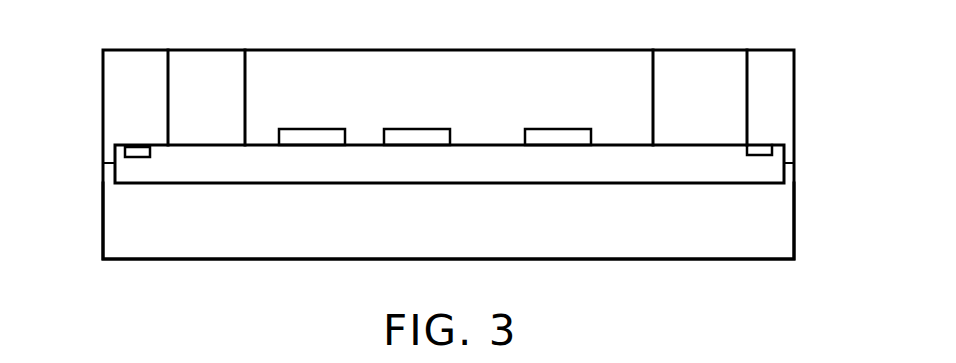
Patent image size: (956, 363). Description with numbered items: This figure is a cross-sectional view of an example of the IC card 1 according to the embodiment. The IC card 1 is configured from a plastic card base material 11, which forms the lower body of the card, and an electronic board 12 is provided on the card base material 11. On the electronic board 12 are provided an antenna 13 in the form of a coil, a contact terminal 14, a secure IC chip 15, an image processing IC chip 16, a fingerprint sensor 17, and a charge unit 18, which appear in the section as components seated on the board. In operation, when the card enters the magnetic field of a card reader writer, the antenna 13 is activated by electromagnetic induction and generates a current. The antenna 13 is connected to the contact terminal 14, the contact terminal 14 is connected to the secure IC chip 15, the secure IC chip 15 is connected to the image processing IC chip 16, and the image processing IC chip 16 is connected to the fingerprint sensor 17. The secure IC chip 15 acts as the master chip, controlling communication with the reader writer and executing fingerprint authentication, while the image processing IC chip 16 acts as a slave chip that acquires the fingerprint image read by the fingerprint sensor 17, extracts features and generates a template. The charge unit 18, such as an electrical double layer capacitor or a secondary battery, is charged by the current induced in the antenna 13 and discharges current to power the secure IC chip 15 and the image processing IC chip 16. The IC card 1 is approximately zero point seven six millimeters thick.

The IC card 1 is at (786, 98).
The card base material 11 is at (787, 231).
The electronic board 12 is at (775, 173).
The antenna 13 is at (130, 151).
The contact terminal 14 is at (208, 63).
The secure IC chip 15 is at (417, 135).
The image processing IC chip 16 is at (558, 135).
The fingerprint sensor 17 is at (702, 63).
The charge unit 18 is at (311, 135).